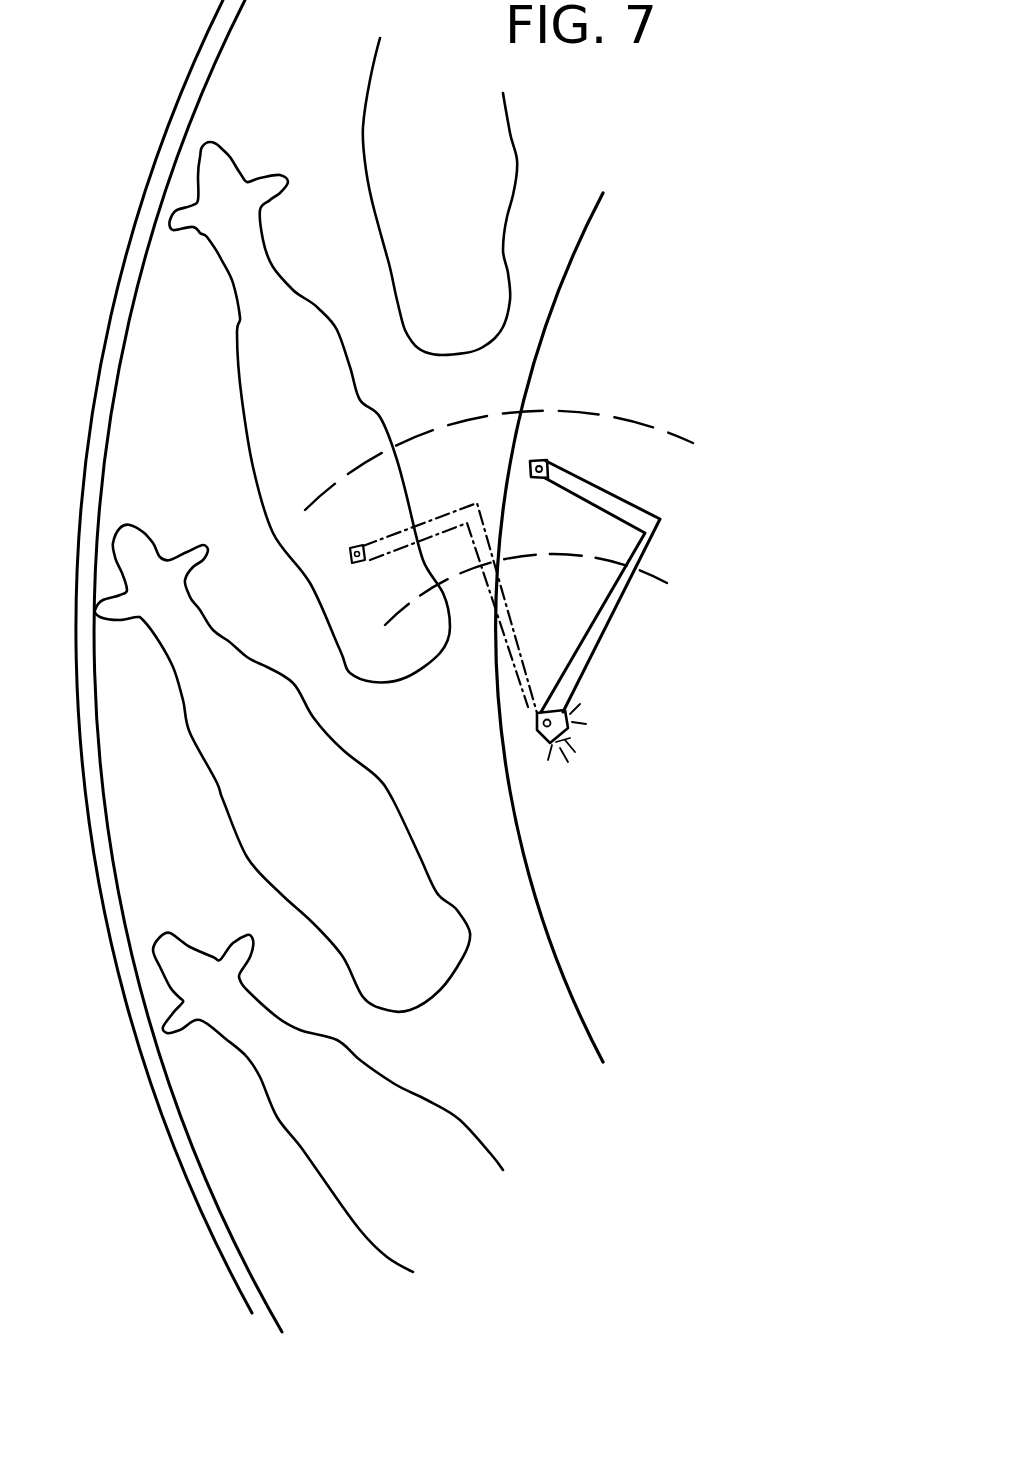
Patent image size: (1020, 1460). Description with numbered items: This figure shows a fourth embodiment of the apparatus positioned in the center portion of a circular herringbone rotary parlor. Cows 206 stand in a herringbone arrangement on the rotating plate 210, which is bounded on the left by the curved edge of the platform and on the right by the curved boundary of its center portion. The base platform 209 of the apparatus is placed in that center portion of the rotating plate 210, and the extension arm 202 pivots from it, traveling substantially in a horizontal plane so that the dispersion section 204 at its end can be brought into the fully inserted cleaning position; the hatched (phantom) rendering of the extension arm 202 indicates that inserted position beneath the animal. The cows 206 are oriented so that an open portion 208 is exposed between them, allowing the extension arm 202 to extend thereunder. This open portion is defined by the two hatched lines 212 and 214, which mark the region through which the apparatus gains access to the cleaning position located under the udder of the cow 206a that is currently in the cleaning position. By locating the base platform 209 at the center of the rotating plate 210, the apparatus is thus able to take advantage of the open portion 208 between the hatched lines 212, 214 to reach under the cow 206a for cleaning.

The extension arm 202 is at (637, 517).
The dispersion section 204 is at (547, 467).
The cows 206 is at (466, 169).
The cow in the cleaning position 206a is at (347, 454).
The open portion 208 is at (430, 490).
The base platform 209 is at (567, 735).
The rotating plate 210 is at (442, 754).
The hatched line 212 is at (657, 577).
The hatched line 214 is at (640, 423).